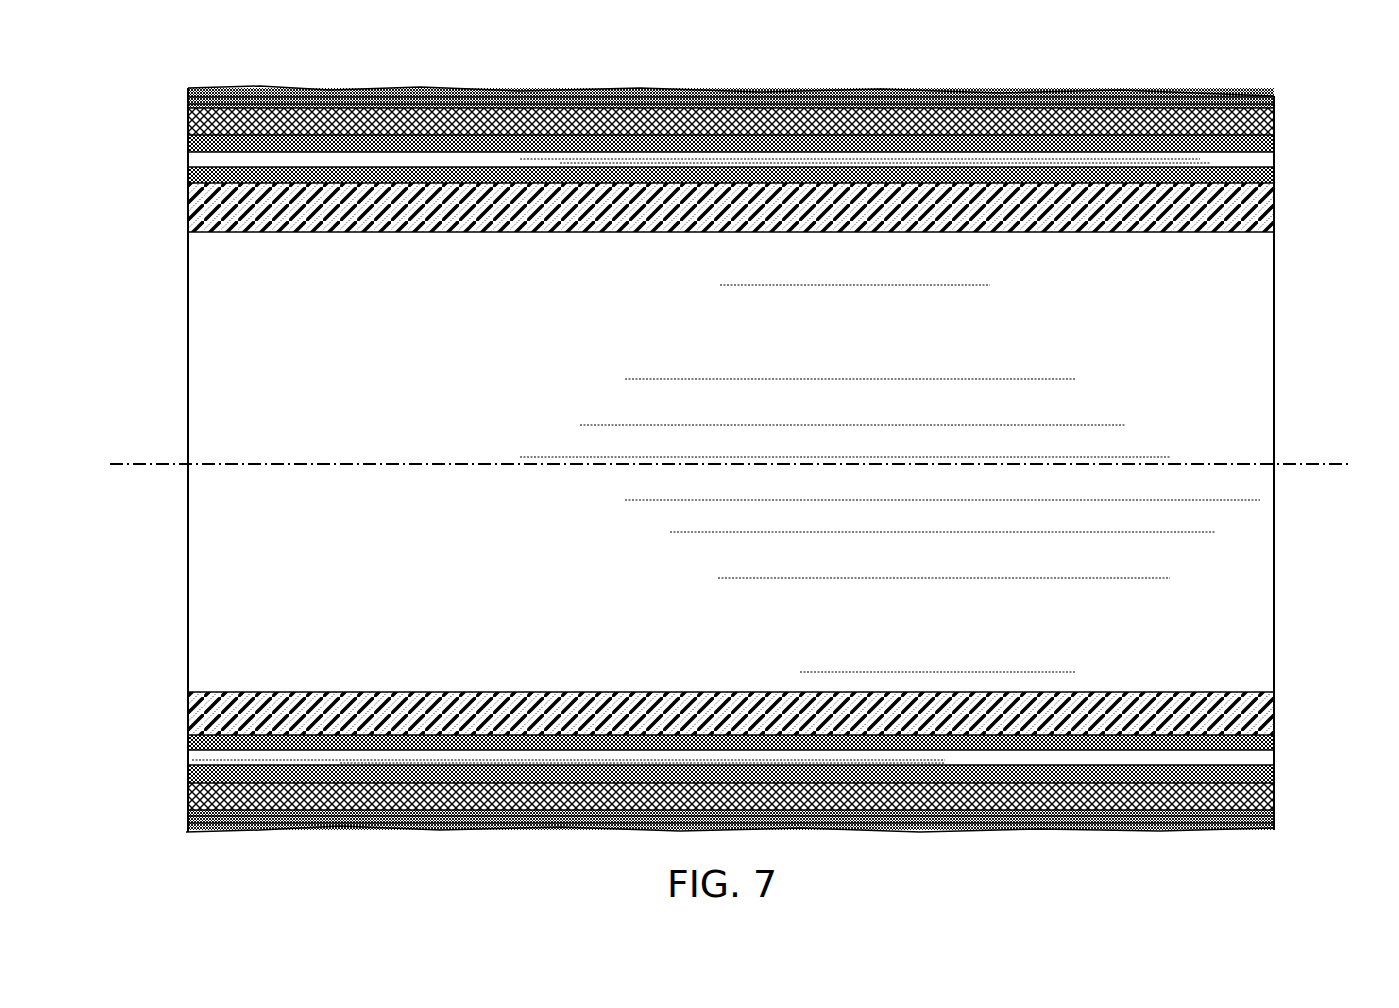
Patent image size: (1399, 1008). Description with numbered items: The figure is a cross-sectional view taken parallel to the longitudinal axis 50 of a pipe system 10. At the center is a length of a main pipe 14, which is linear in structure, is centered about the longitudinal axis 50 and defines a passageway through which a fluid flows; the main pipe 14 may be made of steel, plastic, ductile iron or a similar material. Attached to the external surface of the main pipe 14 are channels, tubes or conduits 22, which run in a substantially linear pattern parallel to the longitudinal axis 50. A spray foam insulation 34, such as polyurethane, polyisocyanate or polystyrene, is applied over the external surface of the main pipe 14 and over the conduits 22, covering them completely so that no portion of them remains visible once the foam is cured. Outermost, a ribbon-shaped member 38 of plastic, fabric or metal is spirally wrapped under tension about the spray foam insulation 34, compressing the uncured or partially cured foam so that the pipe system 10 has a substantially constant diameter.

The pipe system 10 is at (1298, 108).
The main pipe 14 is at (1253, 545).
The channels, tubes or conduits 22 is at (1250, 156).
The spray foam insulation 34 is at (210, 121).
The ribbon-shaped member 38 is at (380, 98).
The longitudinal axis 50 is at (240, 465).